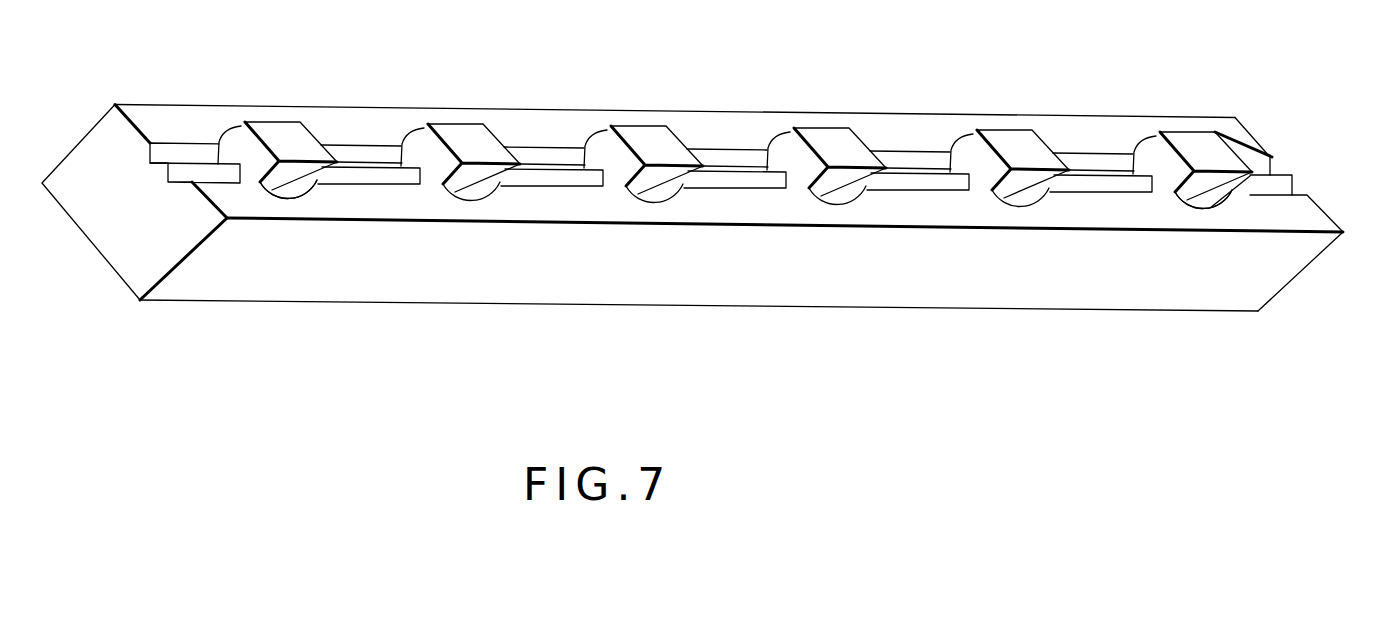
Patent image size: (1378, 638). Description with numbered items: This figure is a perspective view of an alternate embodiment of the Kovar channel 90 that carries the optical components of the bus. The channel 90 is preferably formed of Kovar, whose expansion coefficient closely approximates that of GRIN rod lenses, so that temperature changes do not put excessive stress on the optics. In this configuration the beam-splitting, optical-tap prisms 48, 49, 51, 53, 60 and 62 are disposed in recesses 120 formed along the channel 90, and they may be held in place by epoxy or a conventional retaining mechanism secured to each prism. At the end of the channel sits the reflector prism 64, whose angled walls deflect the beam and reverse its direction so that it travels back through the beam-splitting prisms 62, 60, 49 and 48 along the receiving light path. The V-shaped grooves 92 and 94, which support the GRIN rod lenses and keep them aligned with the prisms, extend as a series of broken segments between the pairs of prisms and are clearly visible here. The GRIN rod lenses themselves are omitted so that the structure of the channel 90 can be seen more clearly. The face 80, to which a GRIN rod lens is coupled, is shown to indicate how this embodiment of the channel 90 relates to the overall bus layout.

The beam-splitting prism 48 is at (263, 122).
The beam-splitting prism 49 is at (447, 130).
The beam-splitting prism 51 is at (630, 132).
The beam-splitting prism 53 is at (827, 140).
The beam-splitting prism 60 is at (1013, 140).
The beam-splitting prism 62 is at (1187, 142).
The reflector prism 64 is at (1247, 147).
The face 80 is at (470, 127).
The channel 90 is at (790, 288).
The V-shaped groove 92 is at (176, 183).
The V-shaped groove 94 is at (150, 162).
The recesses 120 is at (284, 197).